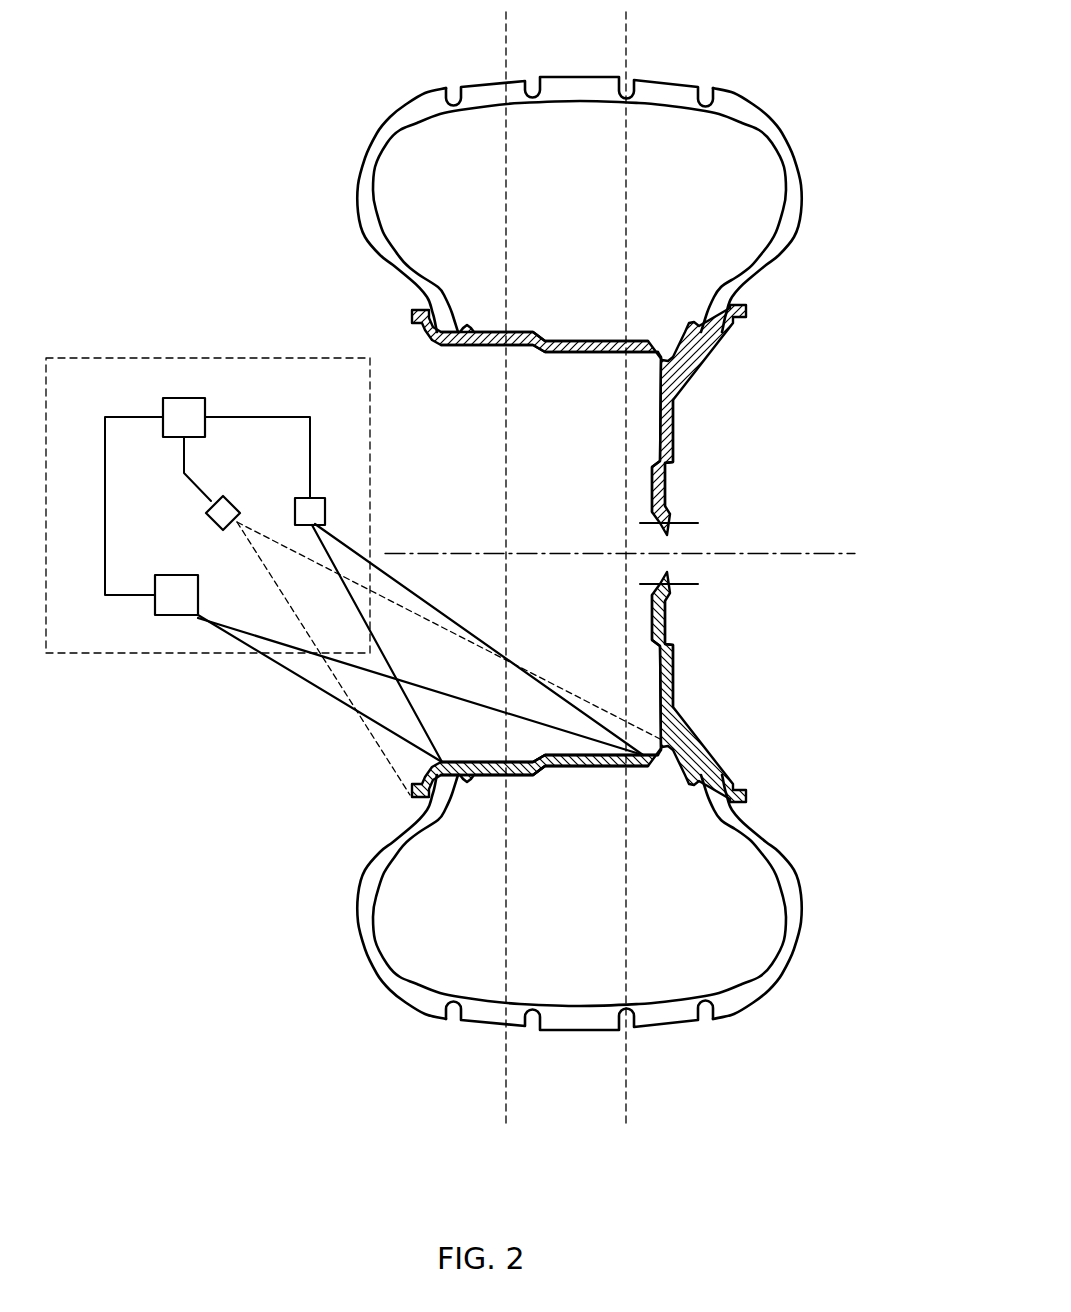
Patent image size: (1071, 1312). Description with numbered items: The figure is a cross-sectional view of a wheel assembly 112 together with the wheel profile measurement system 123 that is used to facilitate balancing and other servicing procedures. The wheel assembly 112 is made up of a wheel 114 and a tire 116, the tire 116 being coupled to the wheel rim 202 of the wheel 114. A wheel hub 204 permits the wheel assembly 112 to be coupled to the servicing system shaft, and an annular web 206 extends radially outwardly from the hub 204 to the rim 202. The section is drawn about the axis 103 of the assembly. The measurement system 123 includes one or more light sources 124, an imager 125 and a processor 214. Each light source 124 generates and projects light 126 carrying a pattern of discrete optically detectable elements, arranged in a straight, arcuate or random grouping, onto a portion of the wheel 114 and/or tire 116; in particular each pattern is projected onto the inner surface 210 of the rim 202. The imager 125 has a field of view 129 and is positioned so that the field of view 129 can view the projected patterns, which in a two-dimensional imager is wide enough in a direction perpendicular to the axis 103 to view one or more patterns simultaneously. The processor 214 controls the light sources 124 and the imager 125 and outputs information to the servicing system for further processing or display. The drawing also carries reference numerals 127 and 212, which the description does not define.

The axis 103 is at (816, 553).
The wheel assembly 112 is at (832, 250).
The wheel 114 is at (692, 416).
The tire 116 is at (797, 207).
The wheel profile measurement system 123 is at (177, 357).
The light source 124 is at (326, 512).
The imager 125 is at (228, 500).
The light 126 is at (312, 690).
The sensor connection 127 is at (412, 593).
The field of view 129 is at (259, 558).
The wheel rim 202 is at (638, 337).
The wheel hub 204 is at (678, 587).
The annular web 206 is at (674, 452).
The inner surface 210 is at (472, 762).
The tread rib reference lines 212 is at (508, 38).
The processor 214 is at (207, 408).